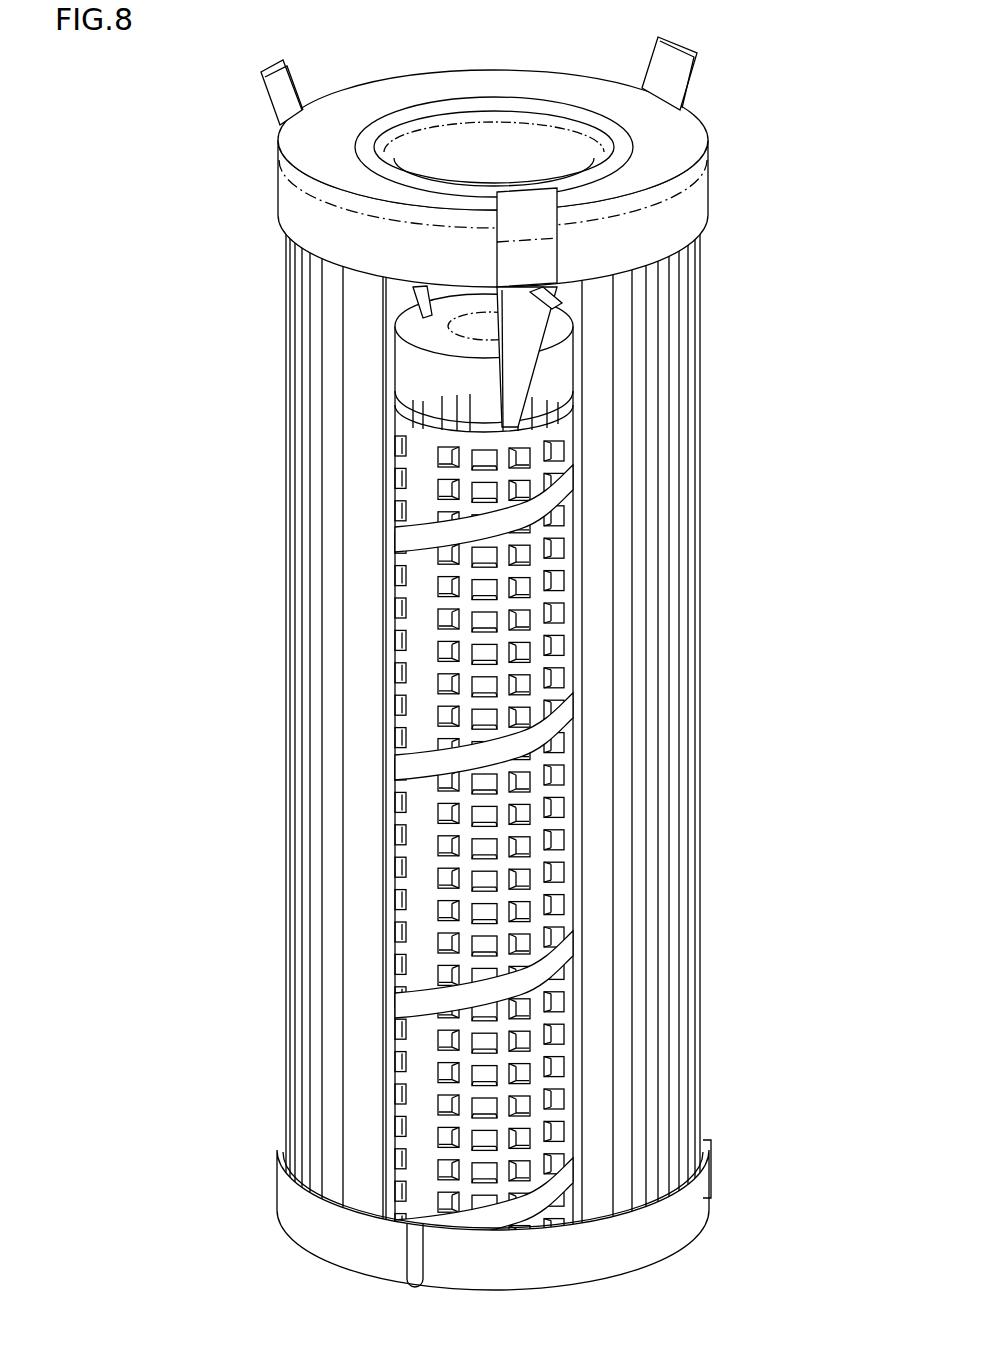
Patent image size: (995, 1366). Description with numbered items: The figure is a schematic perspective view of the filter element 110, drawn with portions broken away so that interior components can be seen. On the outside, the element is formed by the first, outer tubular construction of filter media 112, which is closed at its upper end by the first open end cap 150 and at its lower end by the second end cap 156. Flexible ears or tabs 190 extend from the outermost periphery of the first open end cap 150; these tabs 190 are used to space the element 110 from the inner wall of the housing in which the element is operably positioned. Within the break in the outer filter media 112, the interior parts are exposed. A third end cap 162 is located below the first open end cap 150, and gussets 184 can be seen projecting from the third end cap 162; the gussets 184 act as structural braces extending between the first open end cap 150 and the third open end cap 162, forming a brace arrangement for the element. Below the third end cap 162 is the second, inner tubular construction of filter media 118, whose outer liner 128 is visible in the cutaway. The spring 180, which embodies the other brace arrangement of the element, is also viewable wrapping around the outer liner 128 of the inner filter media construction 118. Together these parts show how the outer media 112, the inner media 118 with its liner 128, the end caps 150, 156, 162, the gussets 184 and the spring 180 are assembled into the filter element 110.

The filter element 110 is at (732, 57).
The first, outer tubular construction of filter media 112 is at (694, 782).
The second, inner tubular construction of filter media 118 is at (452, 1172).
The outer liner 128 is at (553, 628).
The first open end cap 150 is at (694, 148).
The second end cap 156 is at (690, 1210).
The third end cap 162 is at (458, 396).
The spring 180 is at (500, 769).
The gussets 184 is at (405, 312).
The flexible ears or tabs 190 is at (281, 70).